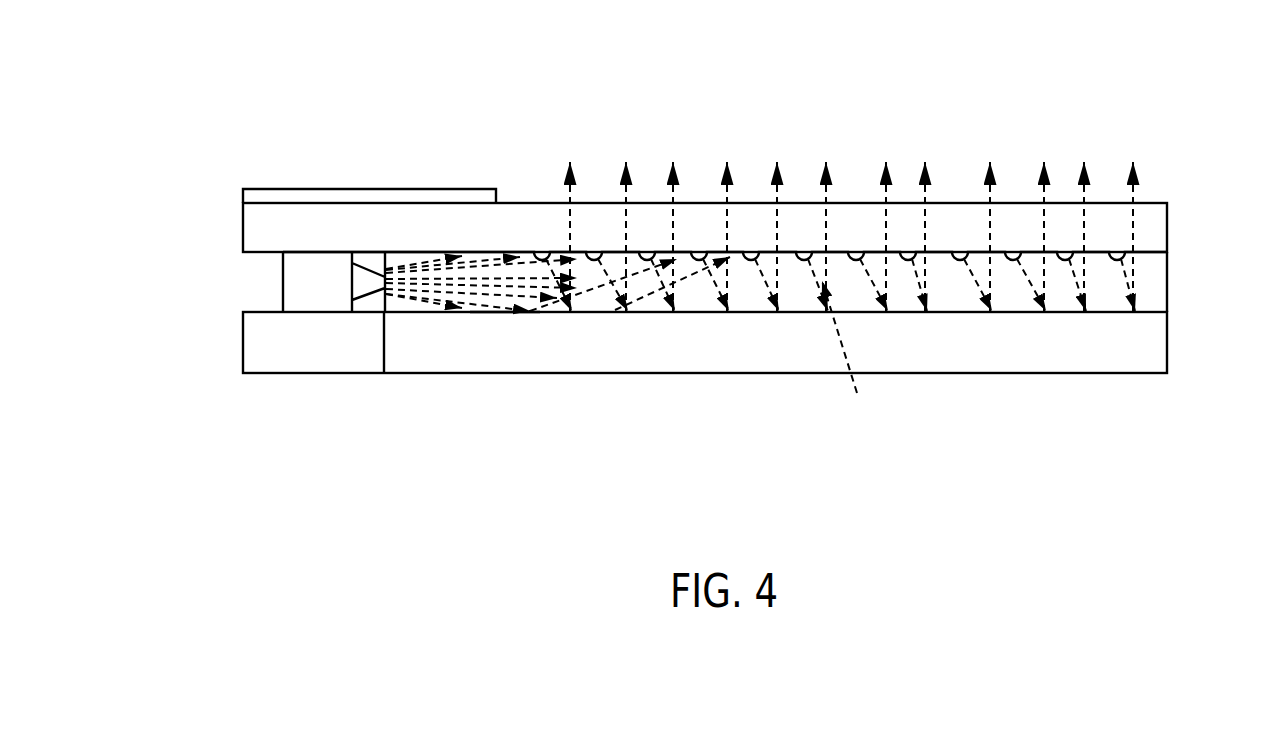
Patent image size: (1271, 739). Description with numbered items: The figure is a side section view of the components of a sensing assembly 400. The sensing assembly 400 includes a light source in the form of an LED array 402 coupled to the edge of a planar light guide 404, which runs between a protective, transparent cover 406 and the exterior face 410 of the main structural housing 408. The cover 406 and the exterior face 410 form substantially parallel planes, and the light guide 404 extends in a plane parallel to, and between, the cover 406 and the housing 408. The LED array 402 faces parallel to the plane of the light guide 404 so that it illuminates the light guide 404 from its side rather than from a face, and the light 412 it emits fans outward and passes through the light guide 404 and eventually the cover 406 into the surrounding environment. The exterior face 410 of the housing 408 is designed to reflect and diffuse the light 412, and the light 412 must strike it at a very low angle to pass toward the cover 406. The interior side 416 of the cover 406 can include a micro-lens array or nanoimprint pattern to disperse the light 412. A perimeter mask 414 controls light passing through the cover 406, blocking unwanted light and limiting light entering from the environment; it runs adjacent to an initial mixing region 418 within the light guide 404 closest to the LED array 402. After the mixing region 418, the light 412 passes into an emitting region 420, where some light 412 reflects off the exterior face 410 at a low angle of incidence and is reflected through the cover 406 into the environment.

The sensing assembly 400 is at (146, 113).
The LED array 402 is at (298, 290).
The light guide 404 is at (1157, 279).
The cover 406 is at (1157, 220).
The housing 408 is at (1157, 358).
The exterior face 410 is at (505, 312).
The light 412 is at (420, 266).
The perimeter mask 414 is at (272, 200).
The interior side 416 is at (1052, 253).
The mixing region 418 is at (440, 290).
The emitting region 420 is at (848, 358).